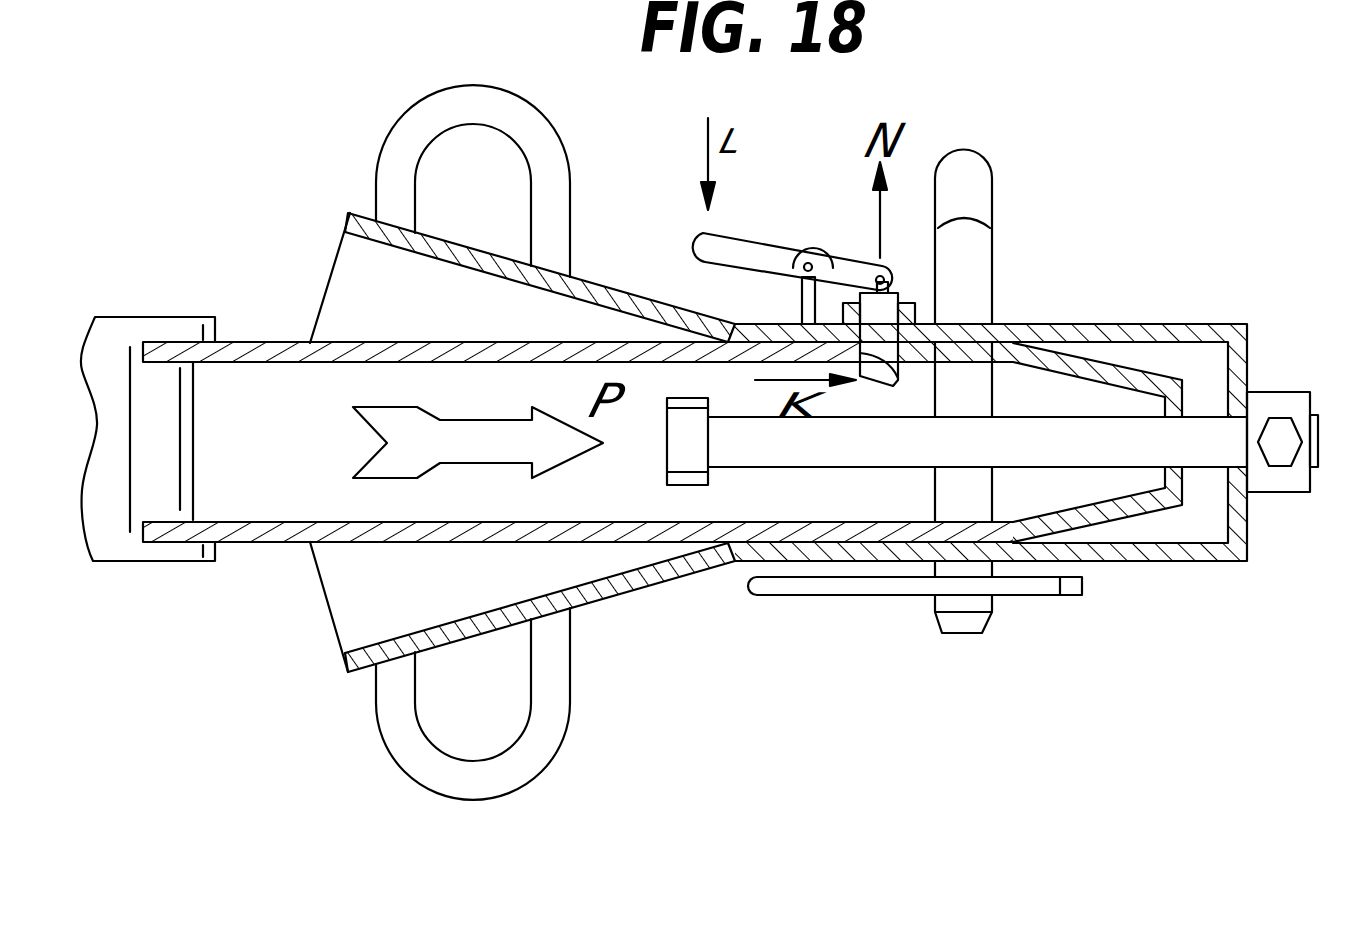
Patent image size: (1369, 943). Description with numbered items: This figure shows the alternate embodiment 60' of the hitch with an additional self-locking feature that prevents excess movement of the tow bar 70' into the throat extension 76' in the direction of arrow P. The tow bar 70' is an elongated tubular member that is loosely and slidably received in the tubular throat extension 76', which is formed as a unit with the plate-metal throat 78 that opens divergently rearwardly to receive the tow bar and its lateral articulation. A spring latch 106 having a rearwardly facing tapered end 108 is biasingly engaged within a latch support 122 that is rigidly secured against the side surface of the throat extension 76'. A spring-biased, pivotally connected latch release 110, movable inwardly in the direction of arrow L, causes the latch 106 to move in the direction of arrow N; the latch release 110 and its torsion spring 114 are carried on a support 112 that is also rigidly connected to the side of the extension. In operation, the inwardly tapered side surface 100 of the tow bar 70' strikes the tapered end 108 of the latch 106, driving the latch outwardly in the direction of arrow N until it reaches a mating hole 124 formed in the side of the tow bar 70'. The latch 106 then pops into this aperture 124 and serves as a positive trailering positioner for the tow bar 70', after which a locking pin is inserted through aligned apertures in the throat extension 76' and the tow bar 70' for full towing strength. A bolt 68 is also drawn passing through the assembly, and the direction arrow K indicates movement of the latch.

The alternate embodiment 60' is at (991, 293).
The bolt 68 is at (1045, 467).
The tow bar 70' is at (456, 442).
The throat extension 76' is at (1007, 373).
The throat 78 is at (612, 593).
The tapered side surface 100 is at (1147, 370).
The spring latch 106 is at (900, 344).
The tapered end 108 is at (873, 380).
The latch release 110 is at (760, 250).
The support 112 is at (797, 298).
The torsion spring 114 is at (813, 247).
The latch support 122 is at (907, 300).
The mating hole 124 is at (898, 380).